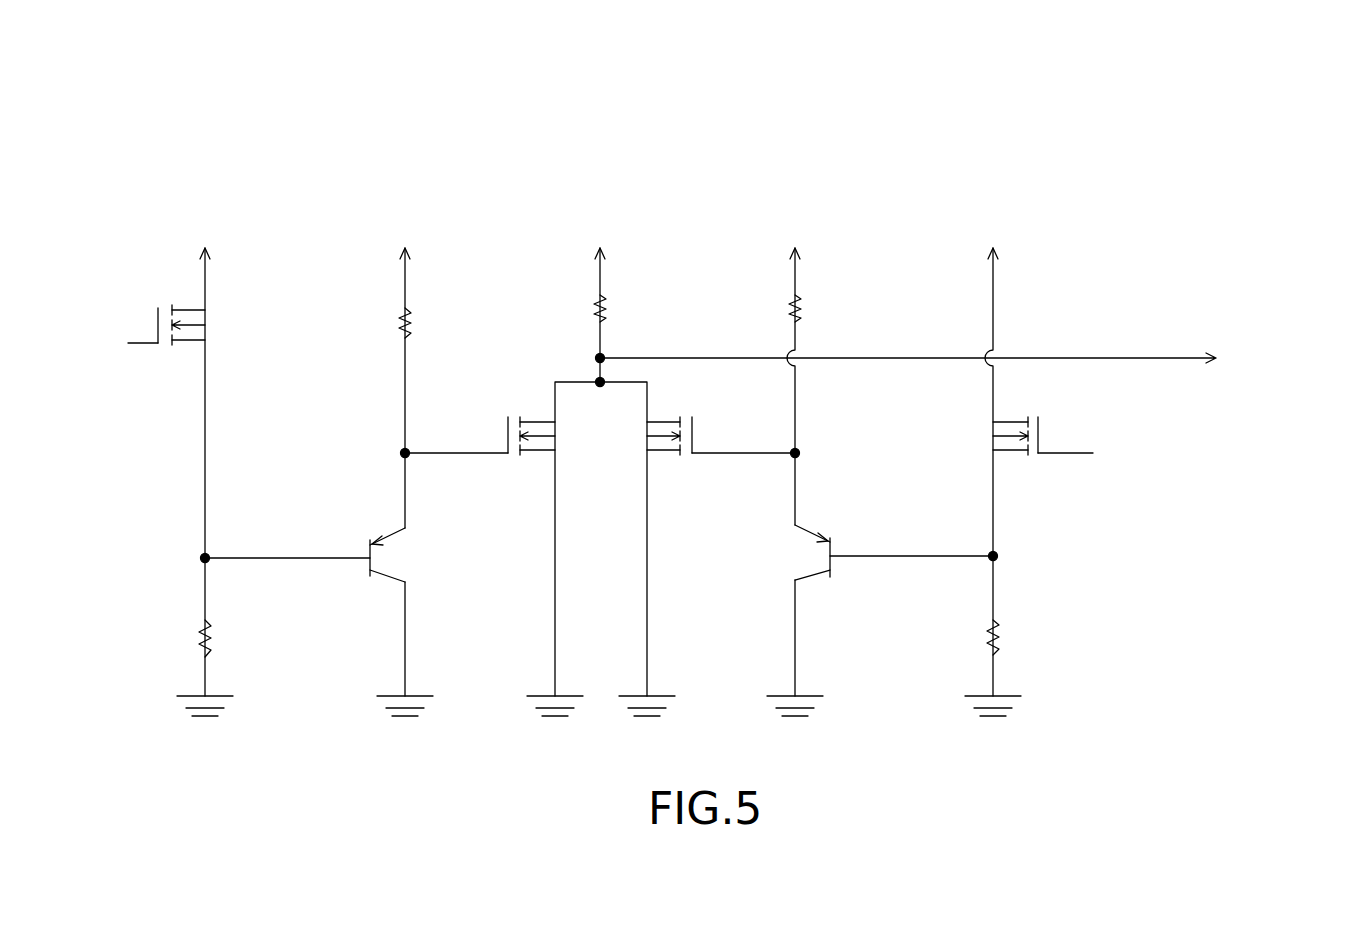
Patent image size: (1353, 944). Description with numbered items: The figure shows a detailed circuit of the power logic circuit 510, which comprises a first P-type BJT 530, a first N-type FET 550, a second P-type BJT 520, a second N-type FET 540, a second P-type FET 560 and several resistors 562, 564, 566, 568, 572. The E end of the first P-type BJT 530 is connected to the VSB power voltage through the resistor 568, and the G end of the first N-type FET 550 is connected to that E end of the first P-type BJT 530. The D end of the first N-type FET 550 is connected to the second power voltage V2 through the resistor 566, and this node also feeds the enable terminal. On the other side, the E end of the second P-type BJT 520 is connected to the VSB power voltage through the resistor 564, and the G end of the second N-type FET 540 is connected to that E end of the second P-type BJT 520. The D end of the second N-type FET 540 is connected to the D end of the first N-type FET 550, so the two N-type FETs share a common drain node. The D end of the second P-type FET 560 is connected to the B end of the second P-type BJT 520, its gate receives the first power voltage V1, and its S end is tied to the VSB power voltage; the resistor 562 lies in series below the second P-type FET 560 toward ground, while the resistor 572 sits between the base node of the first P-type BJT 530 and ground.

The power logic circuit 510 is at (1208, 203).
The second P-type BJT 520 is at (392, 552).
The first P-type BJT 530 is at (810, 550).
The second N-type FET 540 is at (545, 421).
The first N-type FET 550 is at (660, 421).
The second P-type FET 560 is at (207, 327).
The resistor 562 is at (212, 640).
The resistor 564 is at (410, 333).
The resistor 566 is at (607, 314).
The resistor 568 is at (802, 314).
The resistor 572 is at (1000, 640).